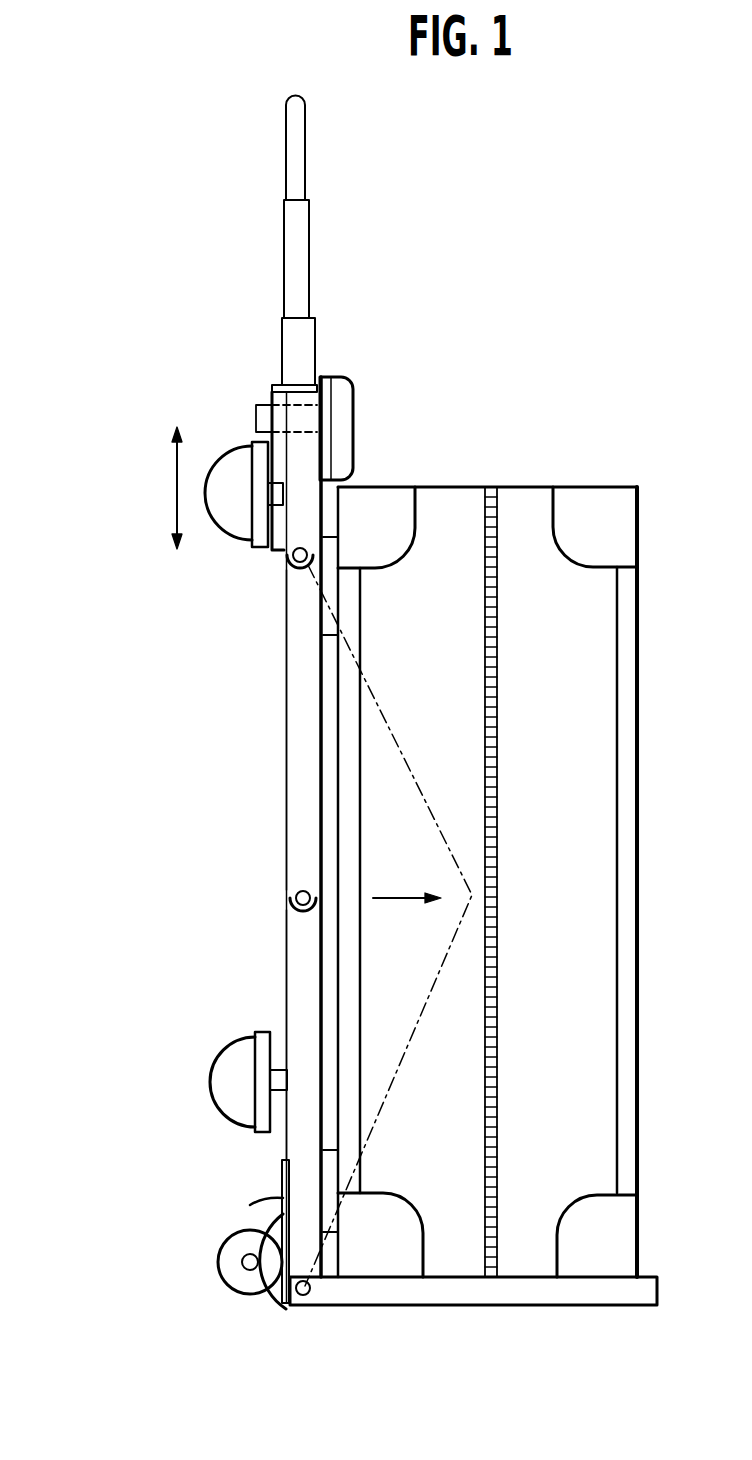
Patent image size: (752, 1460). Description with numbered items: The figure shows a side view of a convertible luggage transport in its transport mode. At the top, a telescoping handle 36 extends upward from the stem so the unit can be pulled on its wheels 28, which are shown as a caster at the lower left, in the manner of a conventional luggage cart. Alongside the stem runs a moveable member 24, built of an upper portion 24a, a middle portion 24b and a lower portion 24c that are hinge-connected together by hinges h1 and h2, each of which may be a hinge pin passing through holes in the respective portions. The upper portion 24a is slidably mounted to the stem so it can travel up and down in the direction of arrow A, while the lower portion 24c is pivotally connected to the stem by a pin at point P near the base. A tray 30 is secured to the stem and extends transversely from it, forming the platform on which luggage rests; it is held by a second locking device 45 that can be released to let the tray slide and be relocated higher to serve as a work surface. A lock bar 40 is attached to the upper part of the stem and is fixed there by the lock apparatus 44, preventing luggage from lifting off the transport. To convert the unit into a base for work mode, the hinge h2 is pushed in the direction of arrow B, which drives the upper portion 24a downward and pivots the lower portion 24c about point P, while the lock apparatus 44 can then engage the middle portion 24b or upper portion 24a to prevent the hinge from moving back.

The telescoping handle 36 is at (302, 263).
The moveable member 24 is at (302, 808).
The upper portion 24a is at (292, 520).
The middle portion 24b is at (298, 768).
The lower portion 24c is at (298, 995).
The hinge h1 is at (290, 563).
The hinge h2 is at (292, 902).
The lock bar 40 is at (345, 432).
The lock apparatus 44 is at (228, 457).
The second locking device 45 is at (218, 1082).
The wheels 28 is at (197, 1248).
The point P is at (302, 1300).
The tray 30 is at (557, 1292).
The arrow A is at (166, 488).
The arrow B is at (407, 882).